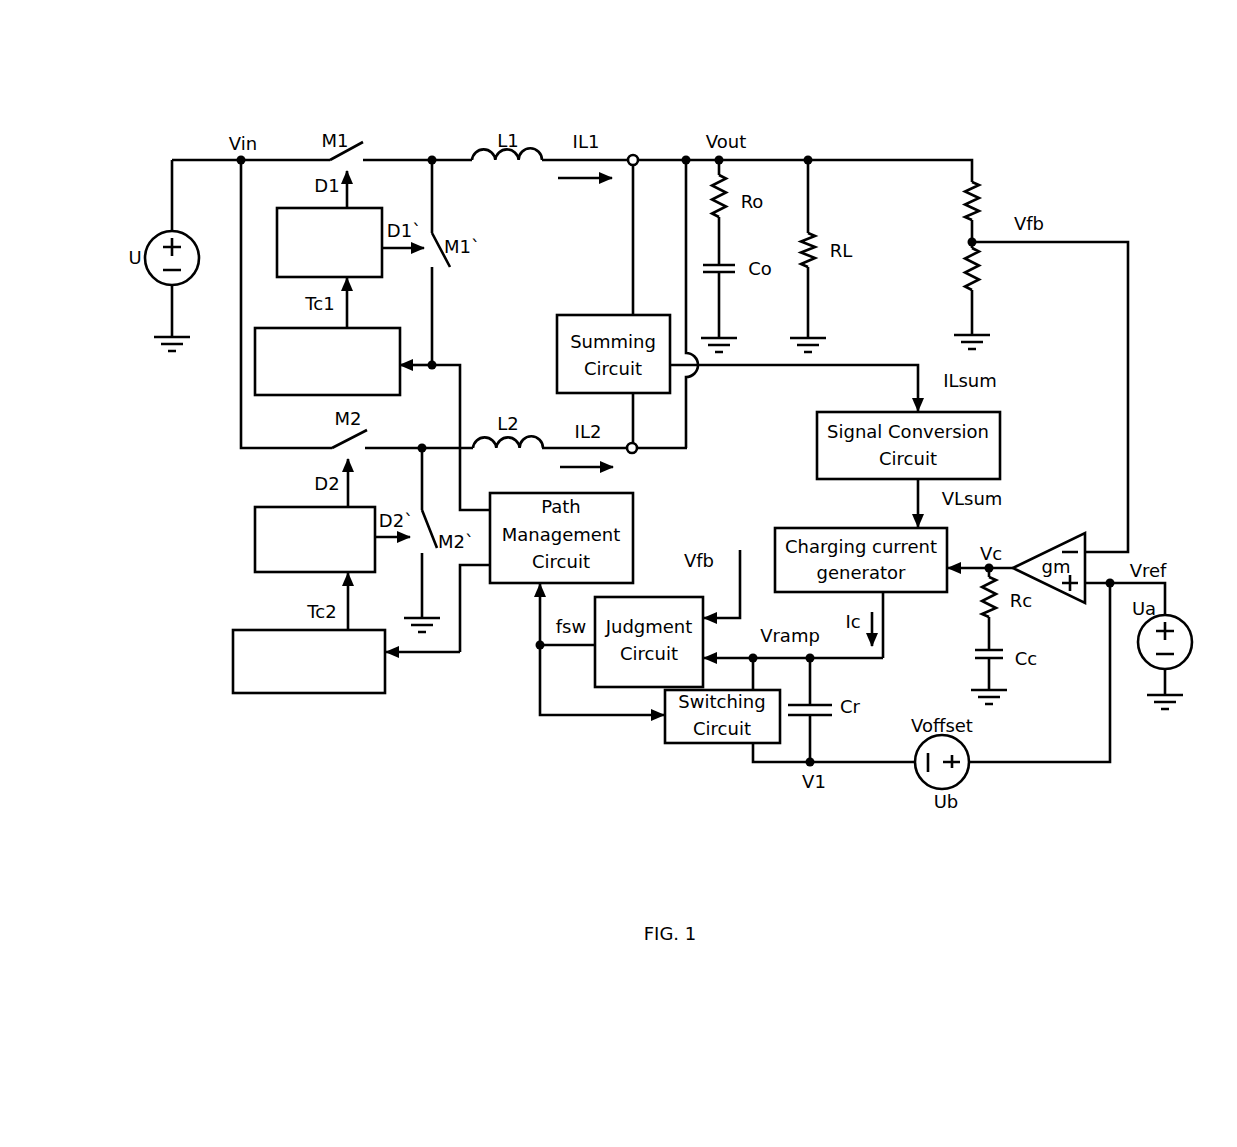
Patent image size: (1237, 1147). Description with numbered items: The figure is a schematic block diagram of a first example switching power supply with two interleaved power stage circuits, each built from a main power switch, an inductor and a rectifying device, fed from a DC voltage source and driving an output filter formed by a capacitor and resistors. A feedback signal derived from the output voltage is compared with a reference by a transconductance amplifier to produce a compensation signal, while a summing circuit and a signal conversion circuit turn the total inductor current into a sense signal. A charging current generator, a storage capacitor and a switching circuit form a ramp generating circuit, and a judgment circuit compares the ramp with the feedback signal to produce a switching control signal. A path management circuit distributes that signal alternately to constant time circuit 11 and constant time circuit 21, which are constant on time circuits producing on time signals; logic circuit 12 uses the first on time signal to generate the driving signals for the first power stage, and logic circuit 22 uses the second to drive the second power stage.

The constant time circuit 11 is at (370, 388).
The logic circuit 12 is at (371, 267).
The constant time circuit 21 is at (352, 687).
The logic circuit 22 is at (365, 567).